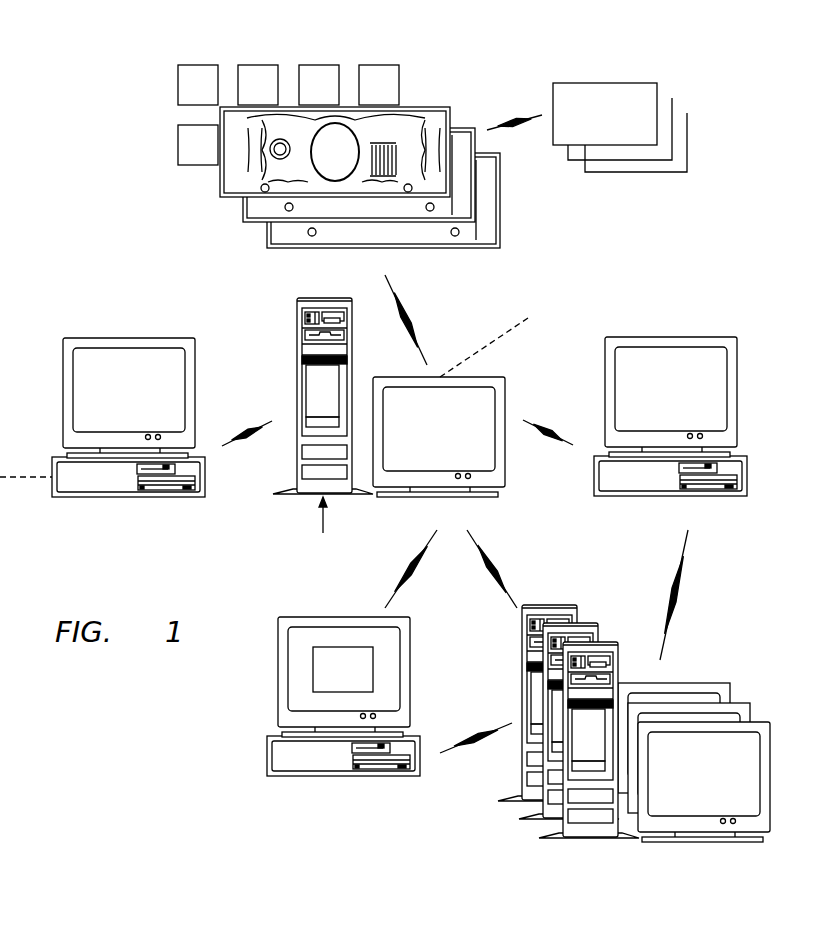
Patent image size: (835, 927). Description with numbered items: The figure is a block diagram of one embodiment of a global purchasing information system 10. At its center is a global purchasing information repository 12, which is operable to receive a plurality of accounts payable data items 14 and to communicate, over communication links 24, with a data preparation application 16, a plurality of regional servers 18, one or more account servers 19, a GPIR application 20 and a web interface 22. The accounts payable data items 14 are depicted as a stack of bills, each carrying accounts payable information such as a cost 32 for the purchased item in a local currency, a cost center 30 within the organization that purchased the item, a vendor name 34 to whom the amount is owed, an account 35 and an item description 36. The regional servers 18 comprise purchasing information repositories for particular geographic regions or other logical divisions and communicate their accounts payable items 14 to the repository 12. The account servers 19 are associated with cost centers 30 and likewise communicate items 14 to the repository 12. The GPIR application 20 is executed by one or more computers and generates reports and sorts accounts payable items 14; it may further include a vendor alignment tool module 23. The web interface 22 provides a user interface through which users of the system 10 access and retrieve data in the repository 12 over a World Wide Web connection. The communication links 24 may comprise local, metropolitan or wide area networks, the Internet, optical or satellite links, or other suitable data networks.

The global purchasing information system 10 is at (60, 163).
The global purchasing information repository 12 is at (297, 322).
The accounts payable data item 14 is at (418, 105).
The data preparation application 16 is at (63, 395).
The regional servers 18 is at (760, 722).
The account servers 19 is at (604, 84).
The GPIR application 20 is at (278, 668).
The web interface 22 is at (737, 392).
The vendor alignment tool module 23 is at (331, 684).
The communication links 24 is at (515, 122).
The cost center 30 is at (178, 143).
The cost 32 is at (198, 65).
The vendor name 34 is at (258, 65).
The account 35 is at (378, 65).
The item description 36 is at (318, 65).